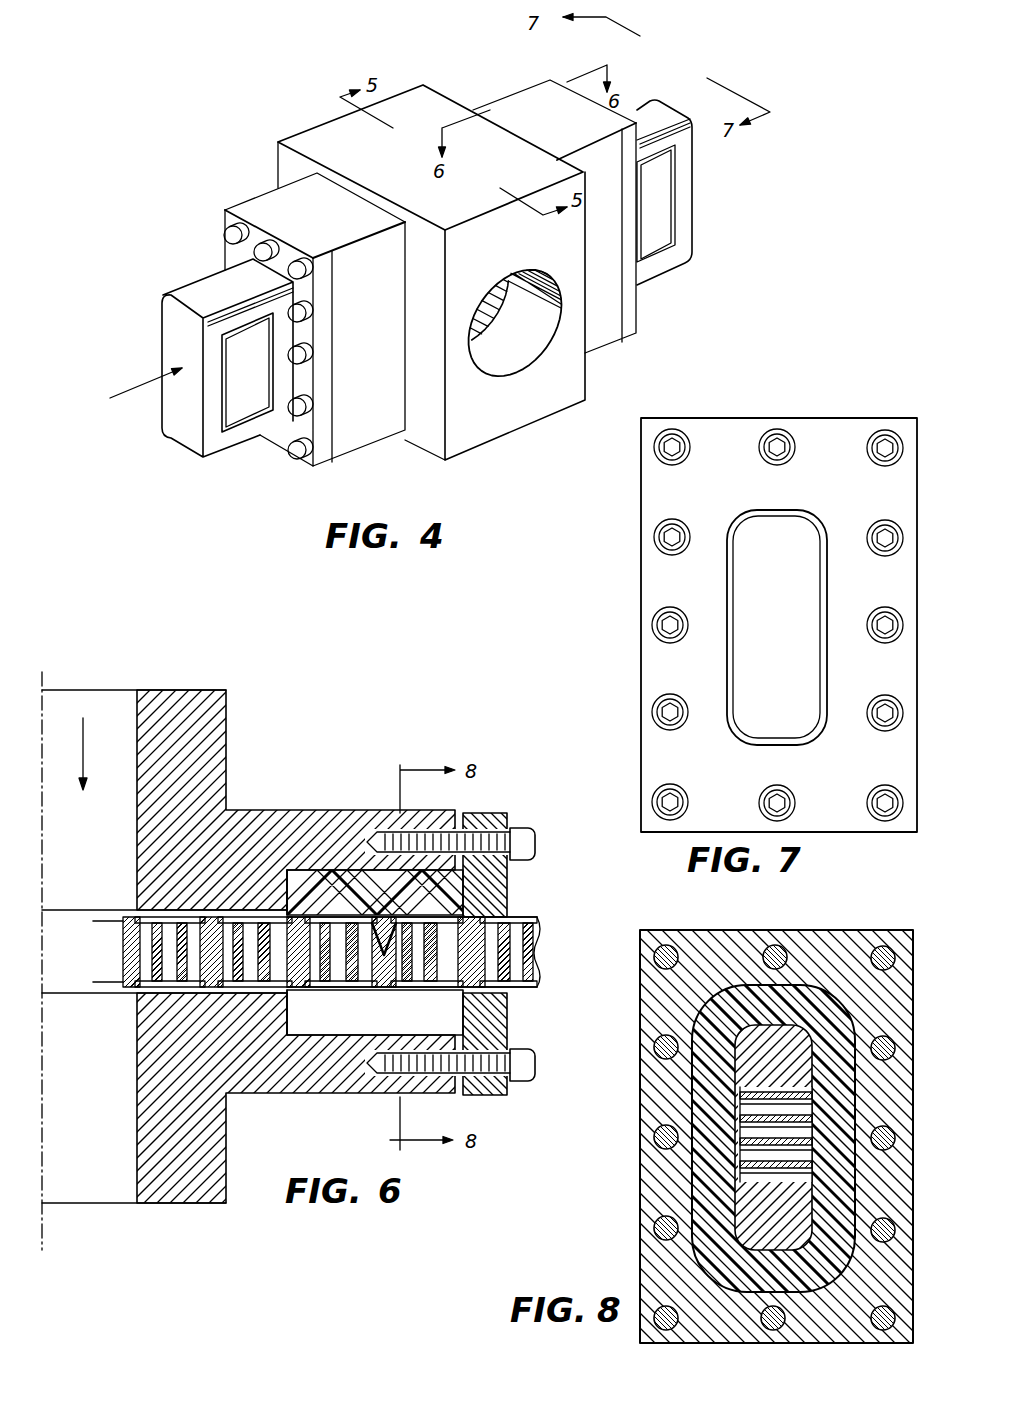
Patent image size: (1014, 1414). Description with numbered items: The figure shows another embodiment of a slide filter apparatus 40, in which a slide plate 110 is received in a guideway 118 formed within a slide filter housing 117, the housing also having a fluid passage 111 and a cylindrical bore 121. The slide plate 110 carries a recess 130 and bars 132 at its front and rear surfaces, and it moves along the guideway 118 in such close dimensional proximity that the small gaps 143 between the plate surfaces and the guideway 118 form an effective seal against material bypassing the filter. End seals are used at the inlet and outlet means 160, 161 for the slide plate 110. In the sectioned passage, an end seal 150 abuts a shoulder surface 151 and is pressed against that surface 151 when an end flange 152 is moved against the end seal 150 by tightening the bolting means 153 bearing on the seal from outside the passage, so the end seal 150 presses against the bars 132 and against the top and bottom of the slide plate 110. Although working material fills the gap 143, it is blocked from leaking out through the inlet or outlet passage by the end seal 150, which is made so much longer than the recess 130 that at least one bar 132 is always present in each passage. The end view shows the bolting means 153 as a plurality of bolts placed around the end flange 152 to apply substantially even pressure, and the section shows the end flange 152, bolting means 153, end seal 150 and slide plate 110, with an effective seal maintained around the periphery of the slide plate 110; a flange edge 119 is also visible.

In FIG. 4, the waveguide assembly 40 is at (385, 62).
In FIG. 4, the slide plate 110 is at (163, 332).
In FIG. 7, the slide plate 110 is at (812, 650).
In FIG. 6, the slide plate 110 is at (537, 968).
In FIG. 8, the slide plate 110 is at (742, 1198).
In FIG. 4, the fluid passage 111 is at (492, 290).
In FIG. 4, the slide filter housing 117 is at (308, 124).
In FIG. 6, the slide filter housing 117 is at (195, 690).
In FIG. 4, the guideway 118 is at (247, 262).
In FIG. 4, the flange edge 119 is at (282, 427).
In FIG. 4, the cylindrical bore 121 is at (502, 365).
In FIG. 4, the recess 130 is at (240, 407).
In FIG. 6, the bars 132 is at (297, 915).
In FIG. 6, the gaps 143 is at (150, 910).
In FIG. 6, the end seal 150 is at (453, 1023).
In FIG. 8, the end seal 150 is at (725, 998).
In FIG. 6, the shoulder surface 151 is at (280, 869).
In FIG. 4, the end flange 152 is at (305, 243).
In FIG. 7, the end flange 152 is at (853, 432).
In FIG. 6, the end flange 152 is at (487, 813).
In FIG. 8, the end flange 152 is at (818, 936).
In FIG. 4, the bolting means 153 is at (306, 410).
In FIG. 7, the bolting means 153 is at (662, 697).
In FIG. 6, the bolting means 153 is at (537, 857).
In FIG. 8, the bolting means 153 is at (885, 948).
In FIG. 4, the inlet means 160 is at (267, 200).
In FIG. 4, the outlet means 161 is at (523, 108).